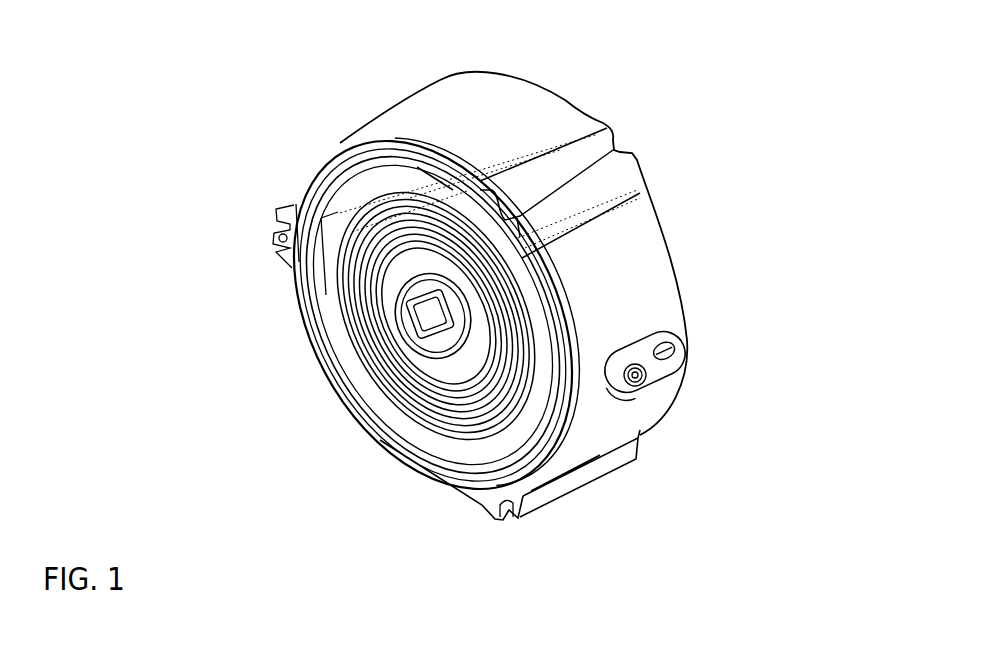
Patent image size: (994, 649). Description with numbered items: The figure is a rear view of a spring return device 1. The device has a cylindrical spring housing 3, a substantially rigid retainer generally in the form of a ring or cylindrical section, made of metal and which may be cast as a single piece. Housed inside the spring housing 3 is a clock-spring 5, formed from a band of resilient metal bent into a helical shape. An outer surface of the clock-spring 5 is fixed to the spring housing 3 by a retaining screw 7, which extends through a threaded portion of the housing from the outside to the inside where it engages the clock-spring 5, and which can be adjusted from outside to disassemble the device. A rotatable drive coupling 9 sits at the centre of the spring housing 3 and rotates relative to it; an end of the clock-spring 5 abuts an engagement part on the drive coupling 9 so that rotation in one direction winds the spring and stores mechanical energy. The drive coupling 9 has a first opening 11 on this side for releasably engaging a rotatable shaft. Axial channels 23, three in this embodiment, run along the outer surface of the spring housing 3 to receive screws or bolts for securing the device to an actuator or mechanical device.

The spring return device 1 is at (572, 80).
The spring housing 3 is at (626, 237).
The clock-spring 5 is at (352, 237).
The retaining screw 7 is at (633, 391).
The drive coupling 9 is at (405, 320).
The first opening 11 is at (437, 318).
The axial channels 23 is at (601, 152).